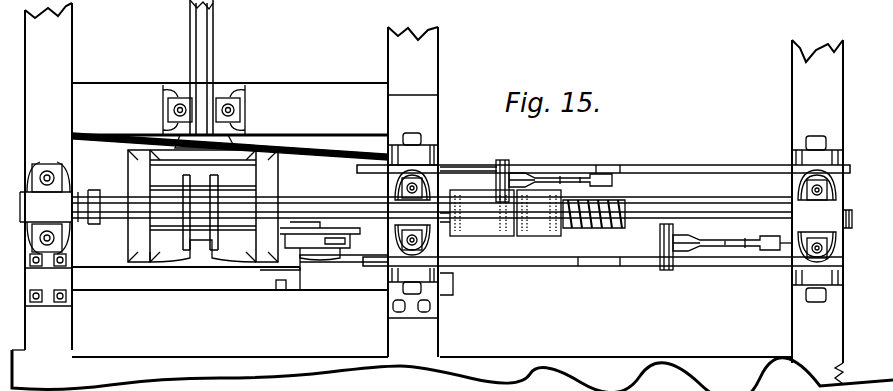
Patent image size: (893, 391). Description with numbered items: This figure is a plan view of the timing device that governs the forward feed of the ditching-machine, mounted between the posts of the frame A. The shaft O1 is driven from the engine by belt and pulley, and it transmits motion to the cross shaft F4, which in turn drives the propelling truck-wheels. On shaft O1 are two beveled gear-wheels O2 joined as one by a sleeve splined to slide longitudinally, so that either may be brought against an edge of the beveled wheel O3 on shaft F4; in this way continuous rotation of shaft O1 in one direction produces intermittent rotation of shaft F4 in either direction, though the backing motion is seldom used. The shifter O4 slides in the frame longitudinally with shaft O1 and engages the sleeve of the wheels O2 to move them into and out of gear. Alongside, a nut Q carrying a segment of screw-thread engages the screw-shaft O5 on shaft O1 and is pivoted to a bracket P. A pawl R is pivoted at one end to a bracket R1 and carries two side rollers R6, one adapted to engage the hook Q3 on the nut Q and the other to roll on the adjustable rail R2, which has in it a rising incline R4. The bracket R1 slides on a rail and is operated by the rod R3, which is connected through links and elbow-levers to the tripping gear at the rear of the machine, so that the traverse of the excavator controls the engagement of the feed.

The frame post A is at (42, 176).
The shaft F4 is at (212, 58).
The rod R3 is at (272, 290).
The shaft O1 is at (330, 222).
The beveled gear-wheels O2 is at (202, 212).
The beveled wheel O3 is at (203, 206).
The shifter O4 is at (203, 262).
The screw-shaft O5 is at (620, 206).
The lever P is at (348, 235).
The pawl R is at (552, 172).
The bracket R1 is at (468, 166).
The adjustable rail R2 is at (704, 166).
The rising incline R4 is at (610, 166).
The side rollers R6 is at (510, 168).
The nut Q is at (482, 213).
The hook Q3 is at (539, 213).